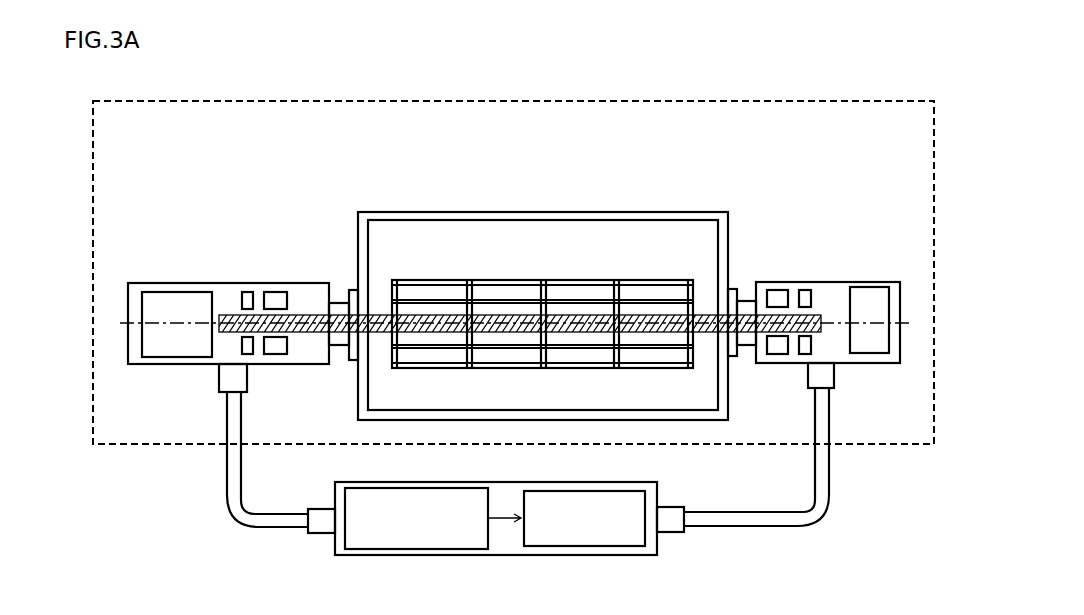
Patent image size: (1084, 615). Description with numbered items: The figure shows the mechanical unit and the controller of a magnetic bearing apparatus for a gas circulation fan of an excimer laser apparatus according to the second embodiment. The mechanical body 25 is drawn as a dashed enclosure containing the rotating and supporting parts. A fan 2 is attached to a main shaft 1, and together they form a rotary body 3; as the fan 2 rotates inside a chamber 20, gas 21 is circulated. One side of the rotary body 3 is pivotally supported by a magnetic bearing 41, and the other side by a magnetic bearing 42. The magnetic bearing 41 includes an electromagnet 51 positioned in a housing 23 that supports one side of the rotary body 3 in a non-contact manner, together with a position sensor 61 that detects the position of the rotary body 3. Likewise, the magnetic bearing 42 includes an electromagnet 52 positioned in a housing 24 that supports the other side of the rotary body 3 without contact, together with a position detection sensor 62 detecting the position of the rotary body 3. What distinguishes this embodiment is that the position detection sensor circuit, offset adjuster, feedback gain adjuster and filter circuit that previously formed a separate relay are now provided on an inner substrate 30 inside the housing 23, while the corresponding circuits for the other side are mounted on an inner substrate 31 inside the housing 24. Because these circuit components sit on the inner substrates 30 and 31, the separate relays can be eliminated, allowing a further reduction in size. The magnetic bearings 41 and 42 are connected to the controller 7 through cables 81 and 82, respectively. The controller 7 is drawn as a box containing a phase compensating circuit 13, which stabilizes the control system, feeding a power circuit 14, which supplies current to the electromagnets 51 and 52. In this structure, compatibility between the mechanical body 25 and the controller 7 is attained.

The mechanical body 25 is at (884, 100).
The housing 23 is at (158, 283).
The housing 24 is at (838, 290).
The inner substrate 30 is at (172, 348).
The inner substrate 31 is at (872, 342).
The magnetic bearing 41 is at (283, 198).
The magnetic bearing 42 is at (907, 218).
The electromagnet 51 is at (266, 283).
The electromagnet 52 is at (782, 290).
The position sensor 61 is at (230, 277).
The position detection sensor 62 is at (815, 290).
The rotary body 3 is at (420, 166).
The main shaft 1 is at (378, 315).
The fan 2 is at (458, 280).
The chamber 20 is at (585, 212).
The gas 21 is at (676, 222).
The cable 81 is at (226, 418).
The cable 82 is at (830, 494).
The controller 7 is at (505, 555).
The phase compensating circuit 13 is at (433, 549).
The power circuit 14 is at (587, 546).